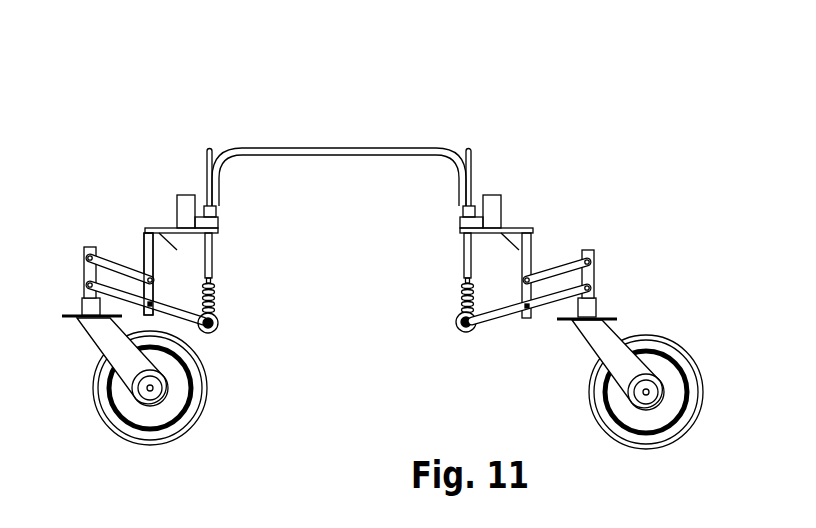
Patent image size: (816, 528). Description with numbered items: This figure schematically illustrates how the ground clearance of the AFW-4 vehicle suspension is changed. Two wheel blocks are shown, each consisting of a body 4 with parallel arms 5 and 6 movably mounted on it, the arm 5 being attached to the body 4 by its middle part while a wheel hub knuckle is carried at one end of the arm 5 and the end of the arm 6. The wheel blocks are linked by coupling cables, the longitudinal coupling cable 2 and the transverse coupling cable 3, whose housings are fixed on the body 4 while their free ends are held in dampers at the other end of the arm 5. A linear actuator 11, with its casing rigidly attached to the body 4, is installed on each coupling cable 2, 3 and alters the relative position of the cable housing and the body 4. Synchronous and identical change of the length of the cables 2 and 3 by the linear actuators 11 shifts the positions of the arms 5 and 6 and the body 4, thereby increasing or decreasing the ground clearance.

The longitudinal coupling cable 2 is at (458, 156).
The transverse coupling cable 3 is at (207, 150).
The body 4 is at (150, 250).
The arm 5 is at (510, 310).
The arm 6 is at (552, 272).
The linear actuator 11 is at (183, 207).